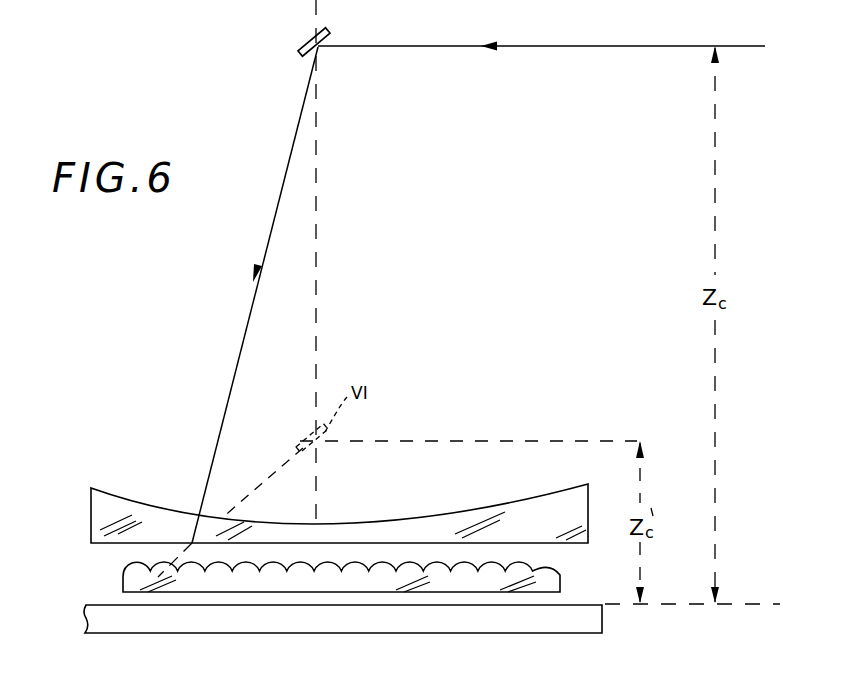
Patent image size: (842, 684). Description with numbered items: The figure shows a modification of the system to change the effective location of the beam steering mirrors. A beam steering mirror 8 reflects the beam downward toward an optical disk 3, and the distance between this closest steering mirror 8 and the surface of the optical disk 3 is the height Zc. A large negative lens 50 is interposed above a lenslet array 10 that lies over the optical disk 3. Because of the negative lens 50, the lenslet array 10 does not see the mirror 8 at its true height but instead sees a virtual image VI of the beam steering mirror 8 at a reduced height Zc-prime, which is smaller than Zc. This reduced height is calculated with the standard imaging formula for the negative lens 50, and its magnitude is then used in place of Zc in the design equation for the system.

The beam steering mirror 8 is at (298, 42).
The large negative lens 50 is at (483, 512).
The lenslet array 10 is at (560, 580).
The optical disk 3 is at (602, 625).